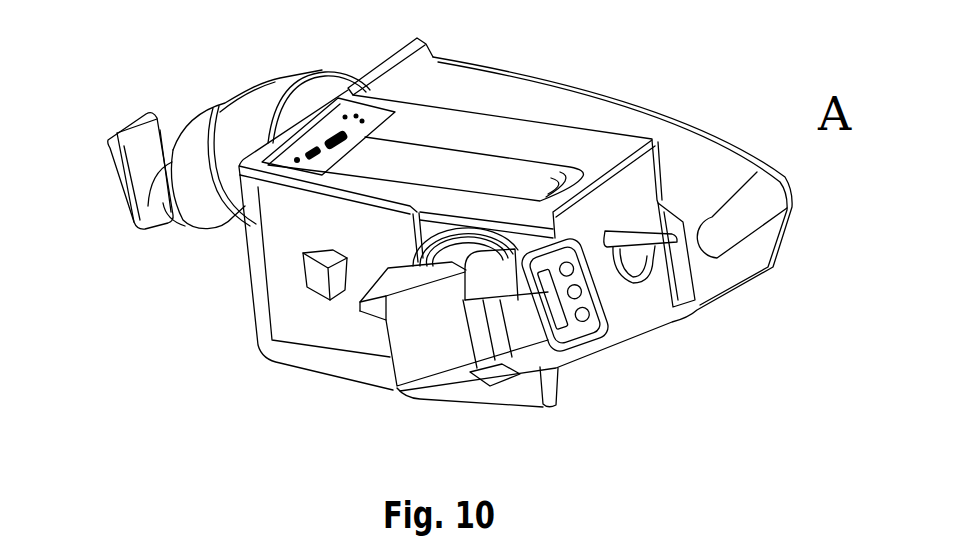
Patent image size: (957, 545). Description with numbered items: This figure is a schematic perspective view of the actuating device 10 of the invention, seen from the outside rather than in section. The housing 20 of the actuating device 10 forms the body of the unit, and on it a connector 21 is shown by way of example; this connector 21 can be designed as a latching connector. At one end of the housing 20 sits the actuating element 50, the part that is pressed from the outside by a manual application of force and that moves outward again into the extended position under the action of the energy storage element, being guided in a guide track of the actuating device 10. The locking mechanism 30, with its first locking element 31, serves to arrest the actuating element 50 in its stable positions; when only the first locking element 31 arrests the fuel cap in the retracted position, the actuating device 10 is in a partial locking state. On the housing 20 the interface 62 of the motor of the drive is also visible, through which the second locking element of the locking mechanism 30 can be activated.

The actuating device 10 is at (695, 372).
The housing 20 is at (563, 145).
The connector 21 is at (328, 300).
The locking mechanism 30 is at (146, 133).
The first locking element 31 is at (145, 136).
The actuating element 50 is at (183, 213).
The interface 62 is at (590, 327).